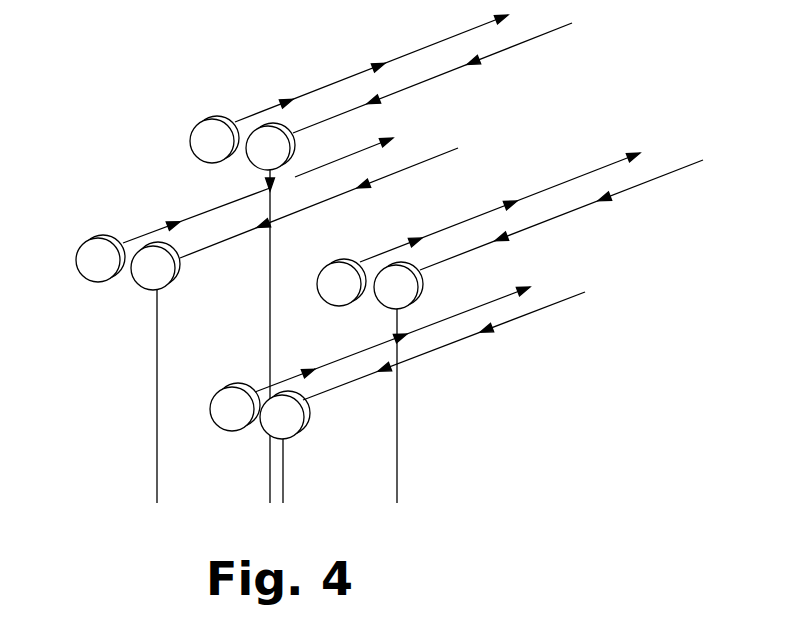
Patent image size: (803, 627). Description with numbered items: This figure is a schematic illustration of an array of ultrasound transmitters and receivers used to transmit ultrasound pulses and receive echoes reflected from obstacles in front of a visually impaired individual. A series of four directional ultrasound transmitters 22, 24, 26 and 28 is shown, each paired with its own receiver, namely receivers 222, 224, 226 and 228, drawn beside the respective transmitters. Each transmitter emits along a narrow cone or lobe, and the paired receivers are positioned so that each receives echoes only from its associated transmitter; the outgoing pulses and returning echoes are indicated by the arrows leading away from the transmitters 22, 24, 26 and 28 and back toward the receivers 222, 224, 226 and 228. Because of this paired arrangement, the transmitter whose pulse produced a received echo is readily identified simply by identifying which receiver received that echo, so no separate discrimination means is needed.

The ultrasound transmitter 22 is at (83, 280).
The receiver 222 is at (138, 286).
The ultrasound transmitter 24 is at (193, 128).
The receiver 224 is at (257, 128).
The ultrasound transmitter 26 is at (348, 262).
The receiver 226 is at (397, 263).
The ultrasound transmitter 28 is at (220, 428).
The receiver 228 is at (263, 432).